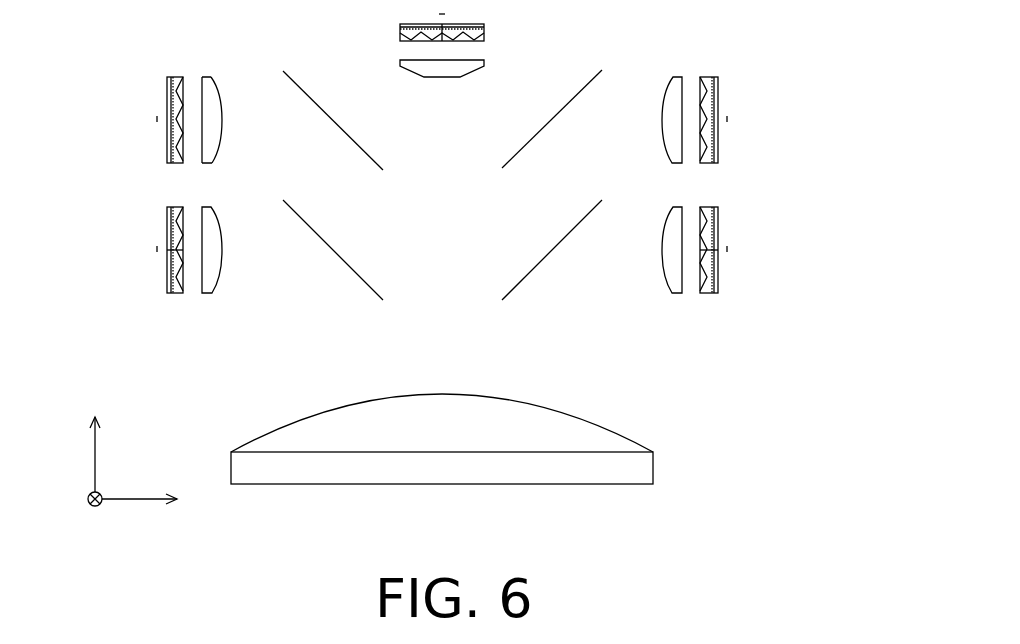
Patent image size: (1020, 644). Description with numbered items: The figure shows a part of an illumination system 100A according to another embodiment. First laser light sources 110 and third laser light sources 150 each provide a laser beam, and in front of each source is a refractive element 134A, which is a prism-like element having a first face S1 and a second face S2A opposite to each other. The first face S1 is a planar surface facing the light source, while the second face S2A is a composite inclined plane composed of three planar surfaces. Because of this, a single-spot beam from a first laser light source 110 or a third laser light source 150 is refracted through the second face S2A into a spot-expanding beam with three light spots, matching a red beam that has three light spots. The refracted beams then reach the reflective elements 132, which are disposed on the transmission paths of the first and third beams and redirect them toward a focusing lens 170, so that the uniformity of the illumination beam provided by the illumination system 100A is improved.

The illumination system 100A is at (436, 275).
The first laser light source 110 is at (166, 222).
The reflective element 132 is at (368, 158).
The refractive element 134A is at (430, 153).
The third laser light source 150 is at (166, 90).
The focusing lens 170 is at (648, 469).
The first face S1 is at (200, 88).
The second face S2A is at (218, 93).